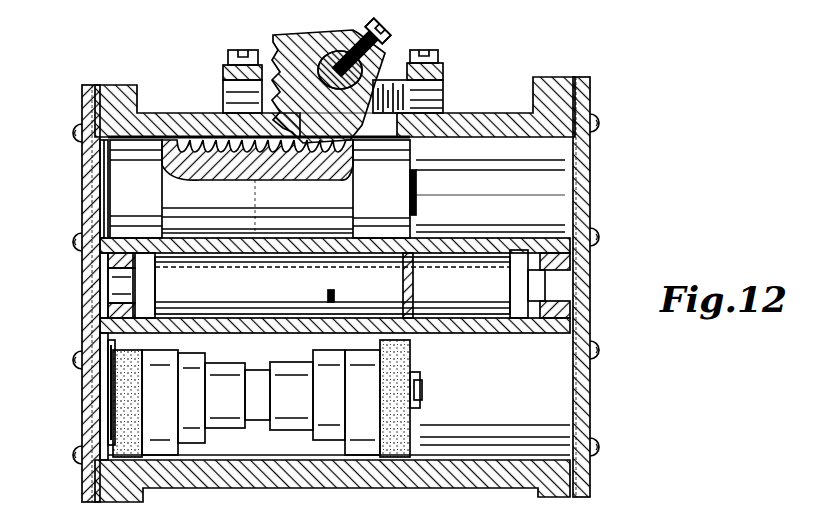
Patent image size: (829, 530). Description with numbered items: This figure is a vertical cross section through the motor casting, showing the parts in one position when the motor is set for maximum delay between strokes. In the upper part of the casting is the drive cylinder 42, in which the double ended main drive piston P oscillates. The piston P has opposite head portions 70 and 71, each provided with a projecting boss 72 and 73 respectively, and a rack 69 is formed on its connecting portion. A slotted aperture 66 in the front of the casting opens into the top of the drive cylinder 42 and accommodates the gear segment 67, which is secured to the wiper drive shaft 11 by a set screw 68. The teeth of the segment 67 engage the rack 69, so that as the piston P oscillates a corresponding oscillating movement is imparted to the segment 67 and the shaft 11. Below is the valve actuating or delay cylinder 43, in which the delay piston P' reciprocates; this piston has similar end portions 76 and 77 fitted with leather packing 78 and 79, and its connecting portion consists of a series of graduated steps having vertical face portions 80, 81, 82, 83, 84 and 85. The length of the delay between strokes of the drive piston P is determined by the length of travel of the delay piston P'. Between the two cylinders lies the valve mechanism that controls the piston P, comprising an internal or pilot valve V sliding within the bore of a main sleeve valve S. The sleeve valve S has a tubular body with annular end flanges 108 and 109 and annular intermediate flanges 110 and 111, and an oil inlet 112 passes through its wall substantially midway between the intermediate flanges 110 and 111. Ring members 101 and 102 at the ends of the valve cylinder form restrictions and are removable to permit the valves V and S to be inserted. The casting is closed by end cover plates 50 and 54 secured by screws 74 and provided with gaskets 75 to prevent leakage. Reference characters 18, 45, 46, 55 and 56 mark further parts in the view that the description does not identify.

The wiper drive shaft 11 is at (375, 100).
The transmission 18 is at (385, 518).
The drive cylinder 42 is at (568, 172).
The valve actuating or delay cylinder 43 is at (552, 405).
The shaft section 45 is at (265, 281).
The shaft section 46 is at (415, 281).
The end cover plate 50 is at (90, 308).
The end cover plate 54 is at (580, 298).
The shaft 55 is at (440, 213).
The worm gear 56 is at (255, 195).
The slotted aperture 66 is at (417, 95).
The gear segment 67 is at (300, 60).
The set screw 68 is at (369, 27).
The rack 69 is at (168, 130).
The head portion 70 is at (125, 158).
The head portion 71 is at (400, 160).
The projecting boss 72 is at (100, 194).
The projecting boss 73 is at (418, 181).
The screws 74 is at (601, 237).
The gaskets 75 is at (92, 86).
The end portion 76 is at (385, 365).
The end portion 77 is at (165, 428).
The leather packing 78 is at (400, 440).
The leather packing 79 is at (112, 368).
The vertical face portion 80 is at (355, 432).
The vertical face portion 81 is at (303, 433).
The vertical face portion 82 is at (268, 428).
The vertical face portion 83 is at (252, 430).
The vertical face portion 84 is at (217, 443).
The vertical face portion 85 is at (193, 450).
The ring member 101 is at (100, 264).
The ring member 102 is at (580, 252).
The annular end flange 108 is at (100, 242).
The annular end flange 109 is at (522, 333).
The annular intermediate flange 110 is at (192, 306).
The annular intermediate flange 111 is at (440, 316).
The oil inlet 112 is at (335, 310).
The pilot valve V is at (90, 279).
The sleeve valve S is at (160, 326).
The main drive piston P is at (257, 206).
The delay piston P' is at (329, 436).